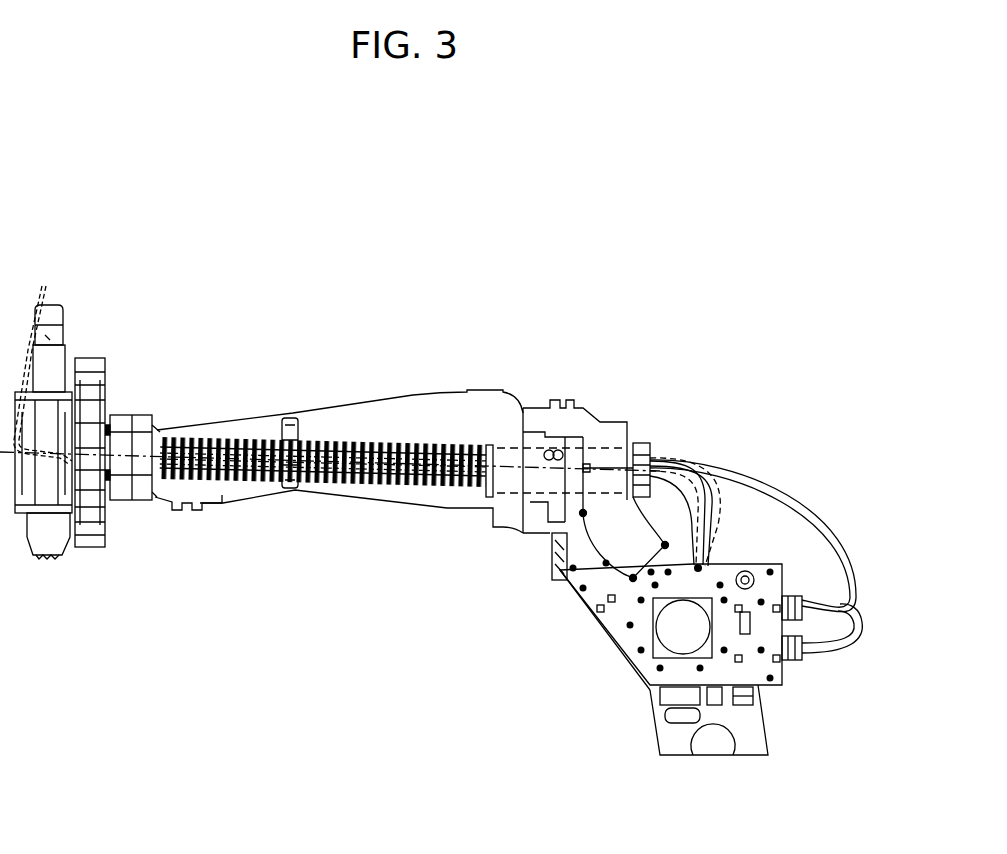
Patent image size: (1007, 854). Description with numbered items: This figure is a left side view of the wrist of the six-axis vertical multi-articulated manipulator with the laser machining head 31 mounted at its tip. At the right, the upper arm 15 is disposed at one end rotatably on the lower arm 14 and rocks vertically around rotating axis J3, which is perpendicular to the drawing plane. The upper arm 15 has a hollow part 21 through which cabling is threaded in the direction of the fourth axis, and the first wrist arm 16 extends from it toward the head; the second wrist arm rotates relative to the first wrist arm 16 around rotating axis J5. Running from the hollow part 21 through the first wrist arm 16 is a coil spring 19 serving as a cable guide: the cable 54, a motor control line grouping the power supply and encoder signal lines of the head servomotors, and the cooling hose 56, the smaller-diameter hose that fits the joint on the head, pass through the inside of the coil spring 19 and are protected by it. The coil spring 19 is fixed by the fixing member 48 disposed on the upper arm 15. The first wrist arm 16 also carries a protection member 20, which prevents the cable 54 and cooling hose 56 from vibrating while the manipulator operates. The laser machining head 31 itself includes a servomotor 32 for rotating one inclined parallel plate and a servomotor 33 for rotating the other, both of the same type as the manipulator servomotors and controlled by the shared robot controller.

The lower arm 14 is at (653, 728).
The upper arm 15 is at (600, 422).
The first wrist arm 16 is at (452, 392).
The coil spring 19 is at (373, 443).
The protection member 20 is at (292, 417).
The hollow part 21 is at (508, 458).
The laser machining head 31 is at (48, 550).
The servomotor 32 is at (60, 307).
The servomotor 33 is at (90, 548).
The fixing member 48 is at (653, 443).
The cable 54 is at (837, 525).
The cooling hose 56 is at (720, 527).
The rotating axis J3 is at (685, 630).
The rotating axis J5 is at (205, 432).